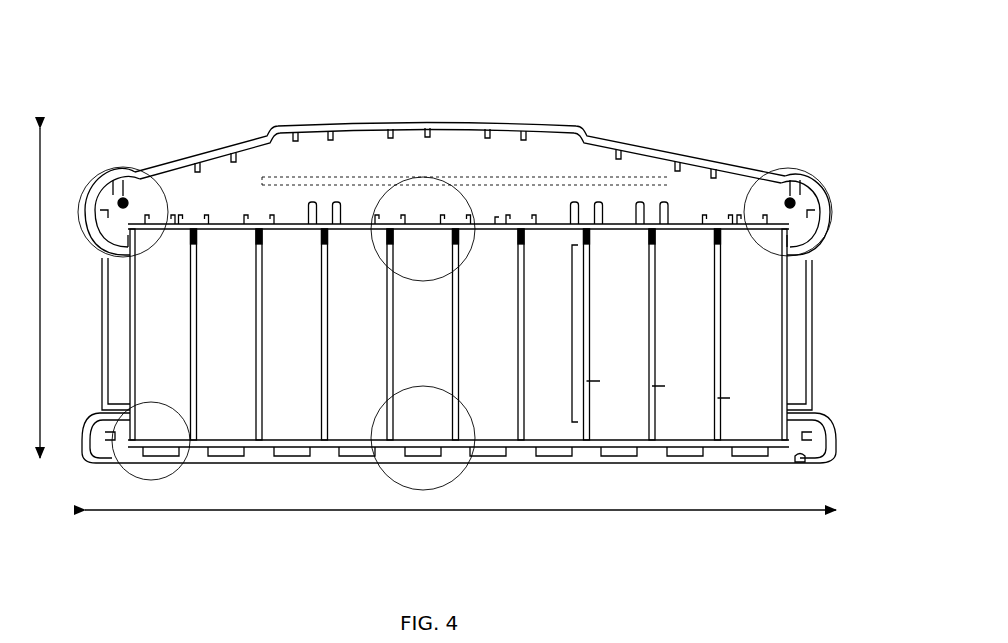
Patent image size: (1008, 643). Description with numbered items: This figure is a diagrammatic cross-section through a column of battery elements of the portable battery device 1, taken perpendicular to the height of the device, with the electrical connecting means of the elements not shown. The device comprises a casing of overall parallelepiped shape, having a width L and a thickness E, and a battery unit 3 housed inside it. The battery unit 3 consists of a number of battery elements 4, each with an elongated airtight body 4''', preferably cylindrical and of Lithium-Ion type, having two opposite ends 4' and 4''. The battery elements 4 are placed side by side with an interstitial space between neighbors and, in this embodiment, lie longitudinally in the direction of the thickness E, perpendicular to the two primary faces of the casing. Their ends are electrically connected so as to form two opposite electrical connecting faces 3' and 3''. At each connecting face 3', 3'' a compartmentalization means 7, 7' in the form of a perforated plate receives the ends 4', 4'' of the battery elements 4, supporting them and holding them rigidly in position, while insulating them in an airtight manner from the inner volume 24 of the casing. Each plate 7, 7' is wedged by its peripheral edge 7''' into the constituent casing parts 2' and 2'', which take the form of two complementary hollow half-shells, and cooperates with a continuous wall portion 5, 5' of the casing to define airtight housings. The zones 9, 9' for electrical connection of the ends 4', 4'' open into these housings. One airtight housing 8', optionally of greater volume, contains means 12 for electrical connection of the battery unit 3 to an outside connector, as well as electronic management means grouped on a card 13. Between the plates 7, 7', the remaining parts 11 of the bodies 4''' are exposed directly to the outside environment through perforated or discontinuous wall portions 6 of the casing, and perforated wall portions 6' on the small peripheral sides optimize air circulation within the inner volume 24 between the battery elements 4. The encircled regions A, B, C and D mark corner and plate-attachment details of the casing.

The portable battery device 1 is at (722, 117).
The casing part 2' is at (460, 96).
The continuous wall portion 5 is at (460, 96).
The casing part 2'' is at (458, 481).
The continuous wall portion 5' is at (458, 481).
The battery unit 3 is at (826, 329).
The electrical connecting face 3' is at (521, 144).
The electrical connecting face 3'' is at (602, 476).
The battery element 4 is at (521, 267).
The end of battery element 4' is at (691, 116).
The end of battery element 4'' is at (292, 474).
The body of battery element 4''' is at (521, 267).
The perforated wall portion 6 is at (456, 334).
The perforated wall portion 6' is at (456, 334).
The compartmentalization means 7 is at (447, 160).
The compartmentalization means 7' is at (761, 470).
The peripheral edge 7''' is at (465, 301).
The airtight housing 8' is at (455, 258).
The electrical connection zone 9 is at (489, 118).
The electrical connection zone 9' is at (662, 477).
The remaining part of body 11 is at (572, 333).
The electrical connection means 12 is at (466, 108).
The card 13 is at (367, 180).
The inner volume 24 is at (793, 398).
The detail A is at (100, 232).
The detail B is at (125, 470).
The detail C is at (380, 263).
The detail D is at (385, 475).
The thickness E is at (27, 293).
The width L is at (460, 530).